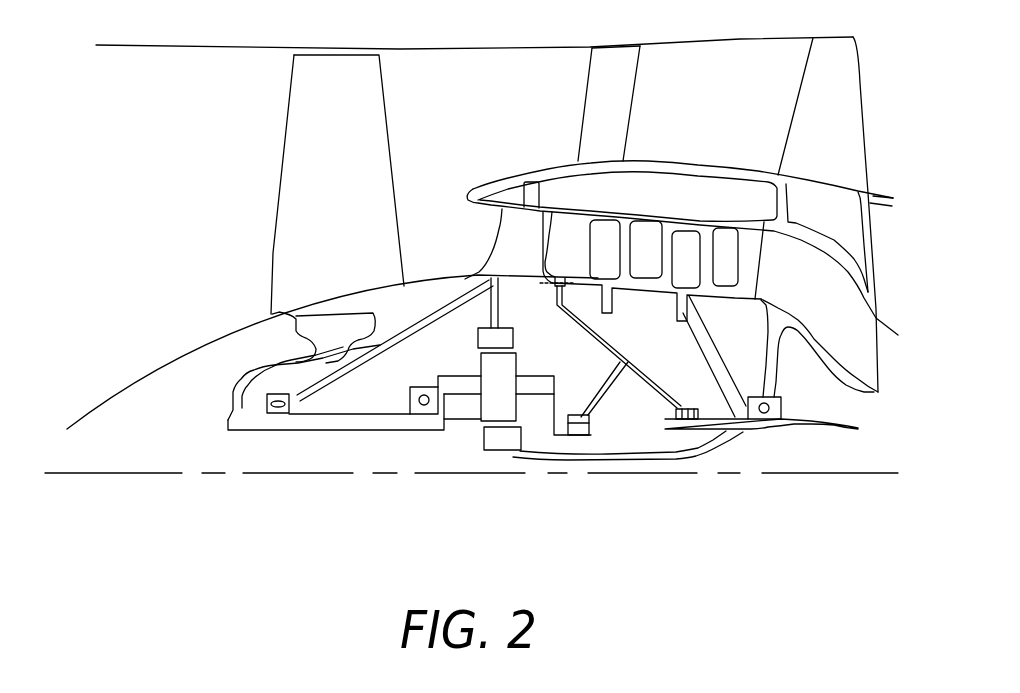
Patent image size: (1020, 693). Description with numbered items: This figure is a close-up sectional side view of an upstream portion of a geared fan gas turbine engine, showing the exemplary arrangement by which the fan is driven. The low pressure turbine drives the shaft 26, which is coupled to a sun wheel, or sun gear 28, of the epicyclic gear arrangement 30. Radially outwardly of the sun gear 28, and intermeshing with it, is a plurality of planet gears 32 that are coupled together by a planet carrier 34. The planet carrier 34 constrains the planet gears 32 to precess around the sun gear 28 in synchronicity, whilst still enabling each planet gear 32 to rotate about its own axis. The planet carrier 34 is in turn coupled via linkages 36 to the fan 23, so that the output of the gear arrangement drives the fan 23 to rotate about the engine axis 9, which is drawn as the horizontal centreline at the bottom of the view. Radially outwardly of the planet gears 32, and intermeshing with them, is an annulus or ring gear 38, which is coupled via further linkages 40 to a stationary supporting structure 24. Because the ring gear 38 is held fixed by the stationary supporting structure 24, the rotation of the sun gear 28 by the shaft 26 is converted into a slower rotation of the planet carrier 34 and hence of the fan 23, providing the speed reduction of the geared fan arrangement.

The engine axis 9 is at (155, 467).
The fan 23 is at (285, 155).
The stationary supporting structure 24 is at (492, 223).
The shaft 26 is at (620, 444).
The sun gear 28 is at (493, 431).
The epicyclic gear arrangement 30 is at (458, 418).
The planet gears 32 is at (480, 407).
The planet carrier 34 is at (543, 399).
The linkages 36 is at (434, 388).
The ring gear 38 is at (495, 328).
The linkages 40 is at (492, 297).